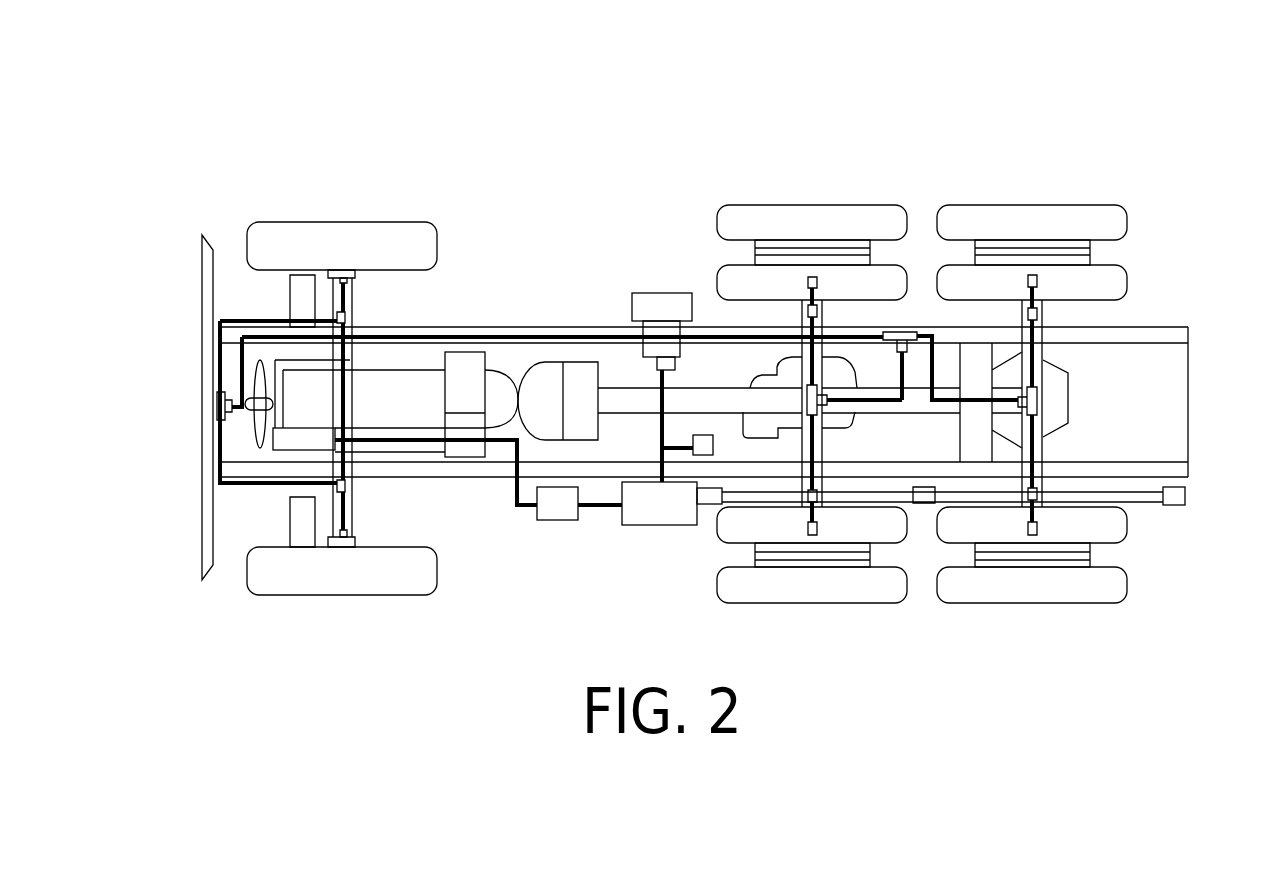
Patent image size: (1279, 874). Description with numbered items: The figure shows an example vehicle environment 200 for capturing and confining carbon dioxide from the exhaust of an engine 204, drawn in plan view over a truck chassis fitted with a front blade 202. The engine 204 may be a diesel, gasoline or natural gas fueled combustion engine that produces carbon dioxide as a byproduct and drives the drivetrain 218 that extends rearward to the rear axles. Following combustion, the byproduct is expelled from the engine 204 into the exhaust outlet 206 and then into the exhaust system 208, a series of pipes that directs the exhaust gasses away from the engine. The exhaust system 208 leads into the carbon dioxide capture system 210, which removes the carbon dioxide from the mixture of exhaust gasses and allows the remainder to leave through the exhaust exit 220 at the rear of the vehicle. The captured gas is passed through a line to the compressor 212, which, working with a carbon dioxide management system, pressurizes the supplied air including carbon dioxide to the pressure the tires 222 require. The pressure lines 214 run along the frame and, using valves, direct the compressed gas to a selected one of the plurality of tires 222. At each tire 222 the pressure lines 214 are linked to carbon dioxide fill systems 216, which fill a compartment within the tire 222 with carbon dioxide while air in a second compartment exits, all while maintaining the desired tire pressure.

The vehicle environment 200 is at (1197, 100).
The plow blade 202 is at (221, 158).
The engine 204 is at (430, 408).
The exhaust outlet 206 is at (305, 427).
The exhaust system 208 is at (513, 492).
The carbon dioxide capture system 210 is at (560, 512).
The compressor 212 is at (660, 297).
The pressure lines 214 is at (504, 332).
The carbon dioxide fill systems 216 is at (347, 281).
The drivetrain 218 is at (618, 405).
The exhaust exit 220 is at (1175, 505).
The tires 222 is at (360, 230).